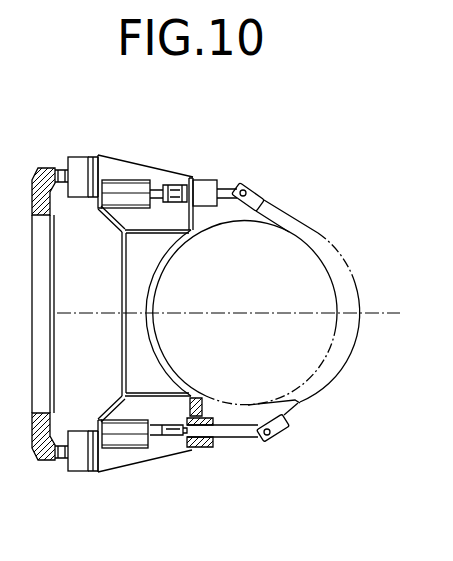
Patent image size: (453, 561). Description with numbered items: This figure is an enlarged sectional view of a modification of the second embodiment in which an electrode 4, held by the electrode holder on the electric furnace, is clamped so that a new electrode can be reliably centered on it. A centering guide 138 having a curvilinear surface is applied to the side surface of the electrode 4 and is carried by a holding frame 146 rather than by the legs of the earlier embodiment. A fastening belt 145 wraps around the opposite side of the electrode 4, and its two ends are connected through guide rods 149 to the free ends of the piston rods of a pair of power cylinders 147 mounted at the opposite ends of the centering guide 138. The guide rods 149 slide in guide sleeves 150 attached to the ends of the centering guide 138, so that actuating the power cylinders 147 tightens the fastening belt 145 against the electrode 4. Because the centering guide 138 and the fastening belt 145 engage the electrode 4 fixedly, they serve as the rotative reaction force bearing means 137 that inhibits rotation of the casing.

The electrode 4 is at (287, 400).
The rotative reaction force bearing means 137 is at (301, 213).
The centering guide 138 is at (196, 378).
The fastening belt 145 is at (320, 390).
The holding frame 146 is at (36, 167).
The power cylinder 147 is at (131, 190).
The guide rod 149 is at (233, 189).
The guide sleeve 150 is at (205, 180).